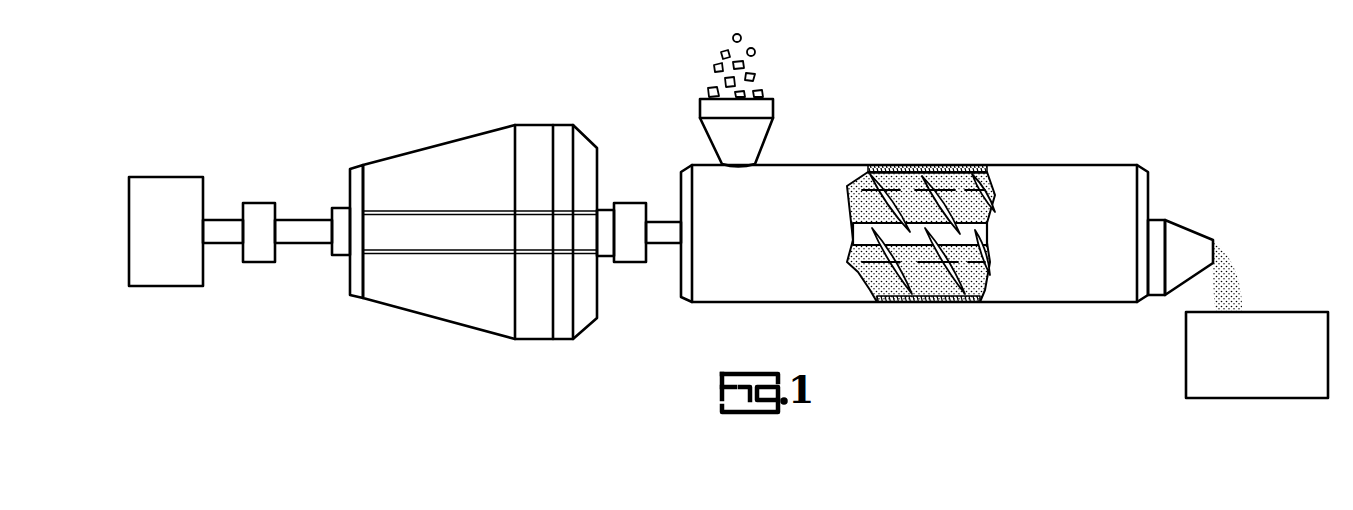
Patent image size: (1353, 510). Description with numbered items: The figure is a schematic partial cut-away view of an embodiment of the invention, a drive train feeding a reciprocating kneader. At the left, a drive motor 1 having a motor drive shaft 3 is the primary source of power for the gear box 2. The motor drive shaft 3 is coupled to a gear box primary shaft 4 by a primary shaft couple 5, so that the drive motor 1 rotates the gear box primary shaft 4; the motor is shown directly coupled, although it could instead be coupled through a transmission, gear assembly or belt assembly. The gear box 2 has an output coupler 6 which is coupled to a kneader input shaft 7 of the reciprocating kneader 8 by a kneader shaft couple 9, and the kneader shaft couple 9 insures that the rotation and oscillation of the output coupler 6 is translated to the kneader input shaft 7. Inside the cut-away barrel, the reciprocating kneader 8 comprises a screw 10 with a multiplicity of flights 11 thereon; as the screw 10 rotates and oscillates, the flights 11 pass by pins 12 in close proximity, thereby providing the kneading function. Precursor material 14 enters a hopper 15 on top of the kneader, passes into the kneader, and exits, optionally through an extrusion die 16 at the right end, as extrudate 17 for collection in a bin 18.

The drive motor 1 is at (163, 177).
The gear box 2 is at (418, 150).
The motor drive shaft 3 is at (224, 219).
The gear box primary shaft 4 is at (305, 219).
The primary shaft couple 5 is at (266, 262).
The output coupler 6 is at (602, 212).
The kneader input shaft 7 is at (630, 212).
The reciprocating kneader 8 is at (1078, 165).
The kneader shaft couple 9 is at (668, 244).
The screw 10 is at (990, 216).
The flights 11 is at (883, 198).
The pins 12 is at (898, 172).
The precursor material 14 is at (752, 73).
The hopper 15 is at (748, 131).
The extrusion die 16 is at (1184, 229).
The extrudate 17 is at (1238, 284).
The bin 18 is at (1285, 312).